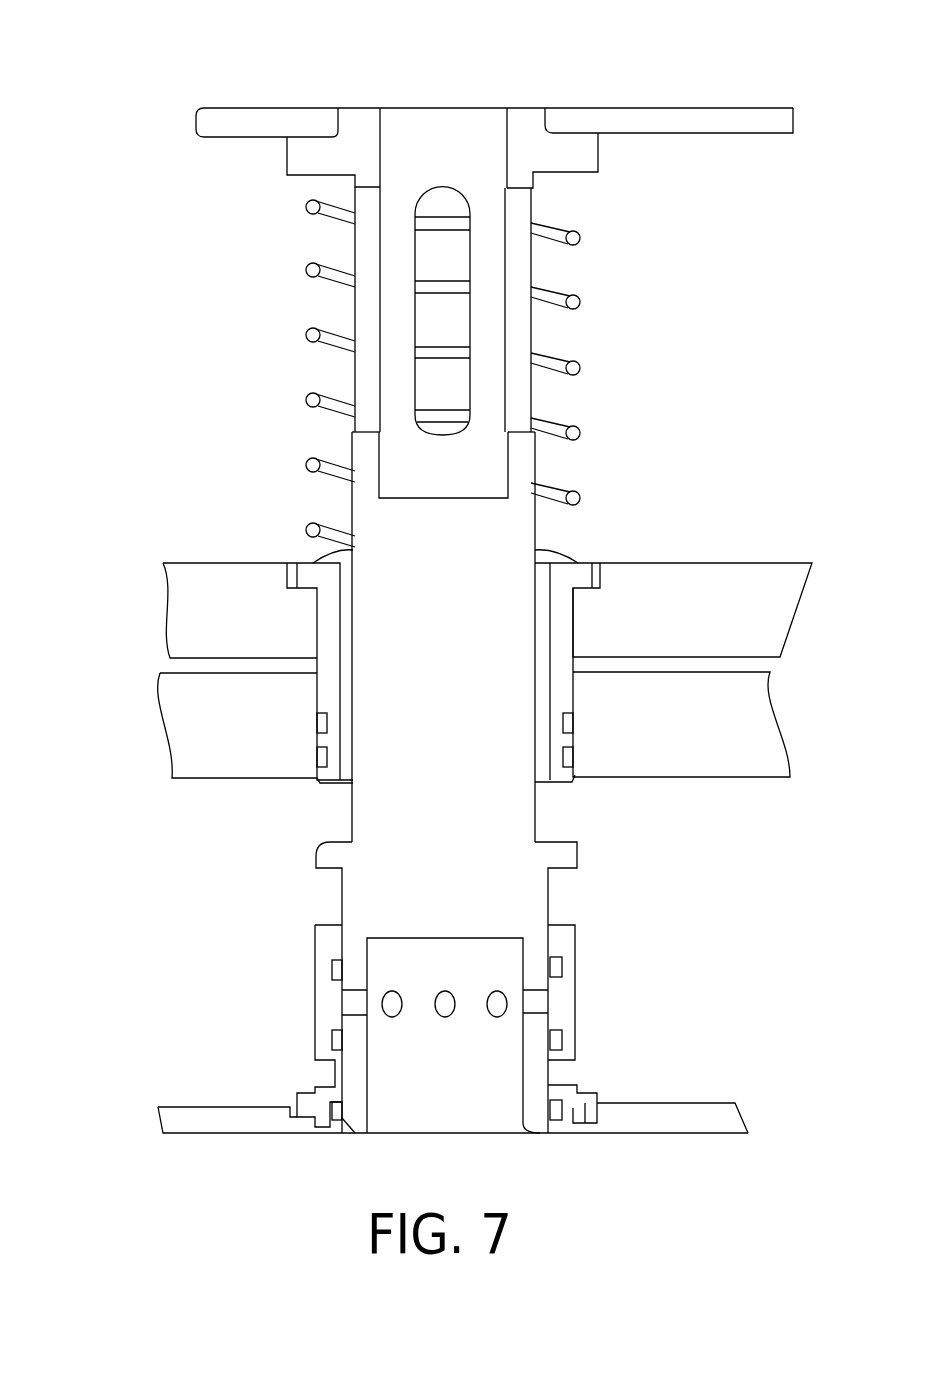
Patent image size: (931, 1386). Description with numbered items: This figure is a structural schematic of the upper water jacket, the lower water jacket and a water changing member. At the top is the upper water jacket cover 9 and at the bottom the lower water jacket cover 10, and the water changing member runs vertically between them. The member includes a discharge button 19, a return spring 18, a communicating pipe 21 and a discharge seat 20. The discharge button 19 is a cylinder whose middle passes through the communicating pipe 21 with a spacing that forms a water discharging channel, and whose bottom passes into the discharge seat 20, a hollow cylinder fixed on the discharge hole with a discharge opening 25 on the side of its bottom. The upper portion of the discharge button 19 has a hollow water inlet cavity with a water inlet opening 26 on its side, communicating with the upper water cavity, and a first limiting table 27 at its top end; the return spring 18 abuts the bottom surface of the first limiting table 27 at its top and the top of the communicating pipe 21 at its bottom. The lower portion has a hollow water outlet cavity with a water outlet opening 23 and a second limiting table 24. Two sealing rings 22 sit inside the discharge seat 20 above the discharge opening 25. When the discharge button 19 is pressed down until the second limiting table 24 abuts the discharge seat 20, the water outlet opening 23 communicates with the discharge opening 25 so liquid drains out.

The upper water jacket cover 9 is at (247, 118).
The lower water jacket cover 10 is at (238, 1117).
The return spring 18 is at (310, 270).
The discharge button 19 is at (383, 522).
The discharge seat 20 is at (325, 995).
The communicating pipe 21 is at (325, 622).
The sealing ring 22 is at (318, 762).
The water outlet opening 23 is at (503, 1000).
The second limiting table 24 is at (568, 852).
The discharge opening 25 is at (565, 1077).
The water inlet opening 26 is at (408, 375).
The first limiting table 27 is at (352, 163).